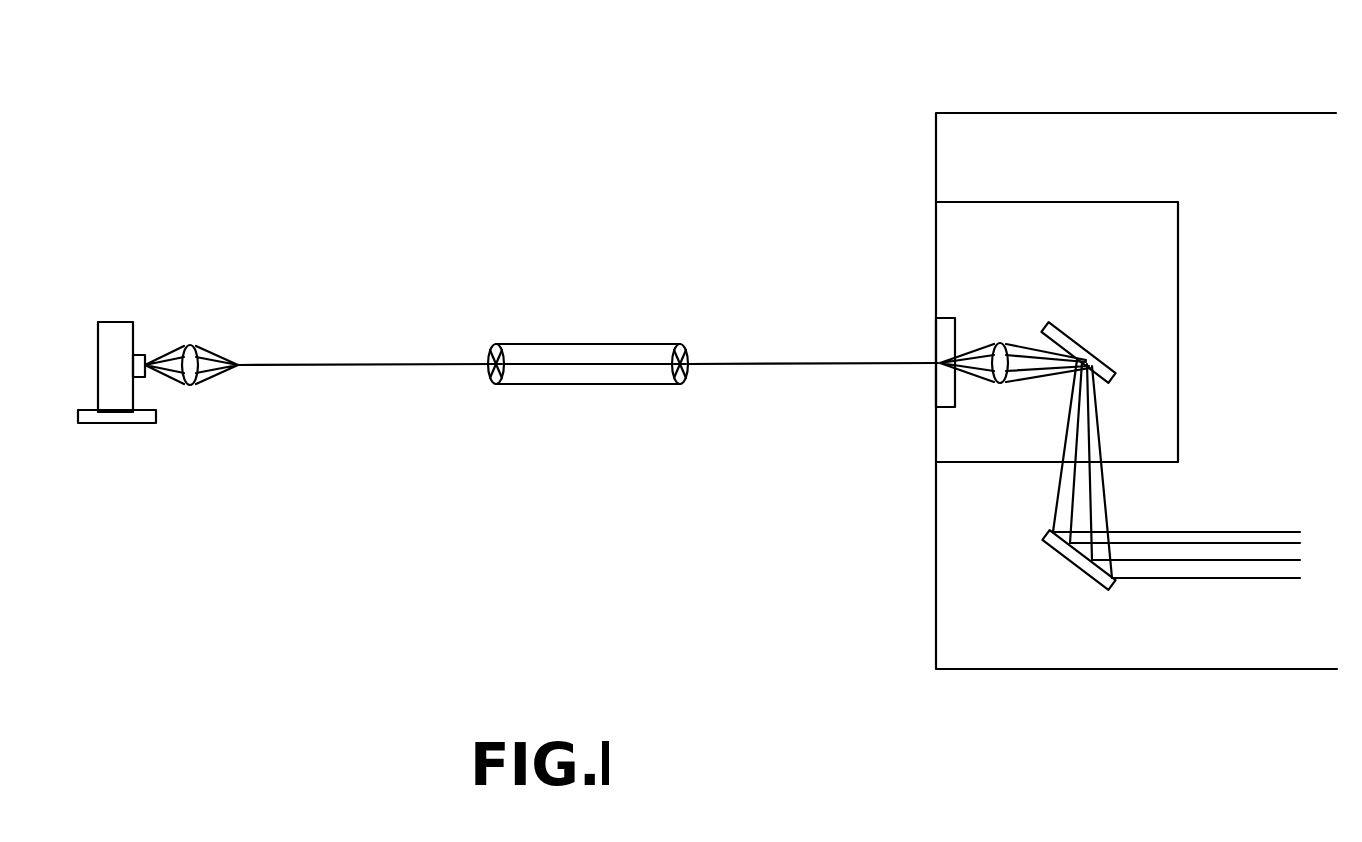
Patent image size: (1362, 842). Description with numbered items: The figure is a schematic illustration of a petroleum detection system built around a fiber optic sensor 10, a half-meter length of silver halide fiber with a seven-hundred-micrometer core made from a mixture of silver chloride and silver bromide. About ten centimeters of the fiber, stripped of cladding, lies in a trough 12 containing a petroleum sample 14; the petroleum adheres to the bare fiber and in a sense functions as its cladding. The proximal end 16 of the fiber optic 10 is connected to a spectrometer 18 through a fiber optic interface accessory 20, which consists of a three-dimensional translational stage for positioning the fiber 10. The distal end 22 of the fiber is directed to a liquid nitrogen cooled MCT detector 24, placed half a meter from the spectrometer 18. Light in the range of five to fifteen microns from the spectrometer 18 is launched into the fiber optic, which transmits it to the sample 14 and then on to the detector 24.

The fiber optic sensor 10 is at (393, 348).
The trough 12 is at (626, 330).
The petroleum sample 14 is at (690, 346).
The proximal end 16 is at (937, 372).
The spectrometer 18 is at (936, 612).
The fiber optic interface accessory 20 is at (1085, 202).
The distal end 22 is at (238, 364).
The MCT detector 24 is at (129, 285).